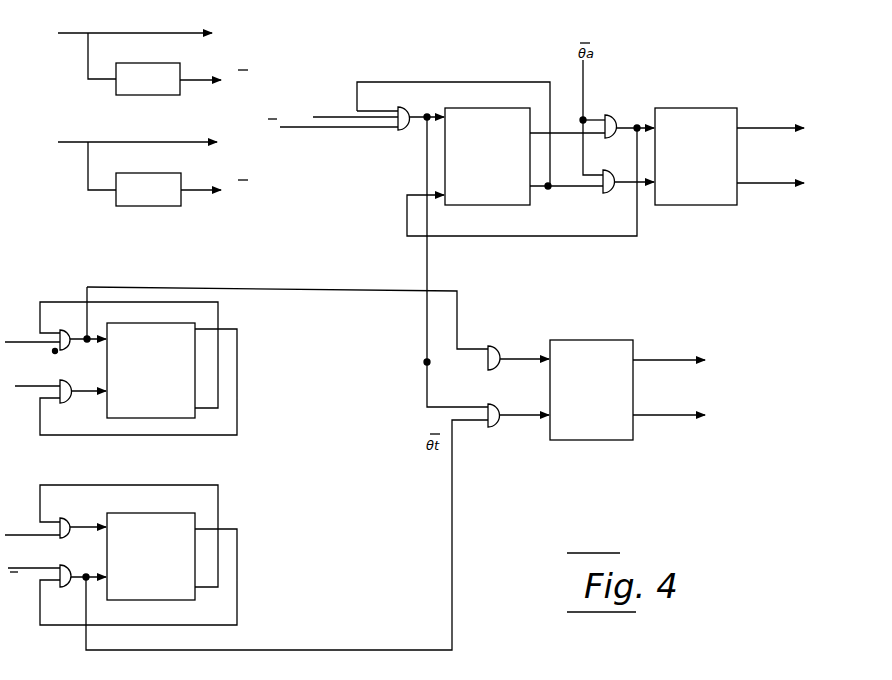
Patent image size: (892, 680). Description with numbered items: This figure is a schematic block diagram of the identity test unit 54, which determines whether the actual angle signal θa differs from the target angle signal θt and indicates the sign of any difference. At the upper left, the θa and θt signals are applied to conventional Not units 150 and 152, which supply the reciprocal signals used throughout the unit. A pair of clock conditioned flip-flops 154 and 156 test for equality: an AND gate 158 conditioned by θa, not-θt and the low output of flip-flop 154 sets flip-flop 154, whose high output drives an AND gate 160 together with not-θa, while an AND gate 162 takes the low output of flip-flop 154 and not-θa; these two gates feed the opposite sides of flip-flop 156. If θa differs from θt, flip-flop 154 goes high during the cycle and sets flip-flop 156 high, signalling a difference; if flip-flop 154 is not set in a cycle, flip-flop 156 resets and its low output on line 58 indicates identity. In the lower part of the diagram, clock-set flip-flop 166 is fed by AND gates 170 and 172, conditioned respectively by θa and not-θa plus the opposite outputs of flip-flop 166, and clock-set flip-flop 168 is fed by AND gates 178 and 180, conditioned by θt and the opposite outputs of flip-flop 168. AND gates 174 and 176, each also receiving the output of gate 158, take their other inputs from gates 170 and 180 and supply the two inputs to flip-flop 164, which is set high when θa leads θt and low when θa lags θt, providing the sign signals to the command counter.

The Not unit 150 is at (155, 95).
The Not unit 152 is at (160, 206).
The identity test unit 54 is at (402, 71).
The AND gate 158 is at (405, 107).
The clock conditioned flip-flop 154 is at (497, 108).
The AND gate 160 is at (612, 115).
The AND gate 162 is at (612, 193).
The clock conditioned flip-flop 156 is at (690, 108).
The line 58 is at (770, 185).
The clock-set flip-flop 166 is at (173, 418).
The AND gate 170 is at (80, 320).
The AND gate 172 is at (68, 403).
The clock-set flip-flop 168 is at (195, 513).
The AND gate 178 is at (66, 518).
The AND gate 180 is at (66, 565).
The AND gate 174 is at (495, 346).
The AND gate 176 is at (497, 427).
The clock conditioned flip-flop 164 is at (605, 340).